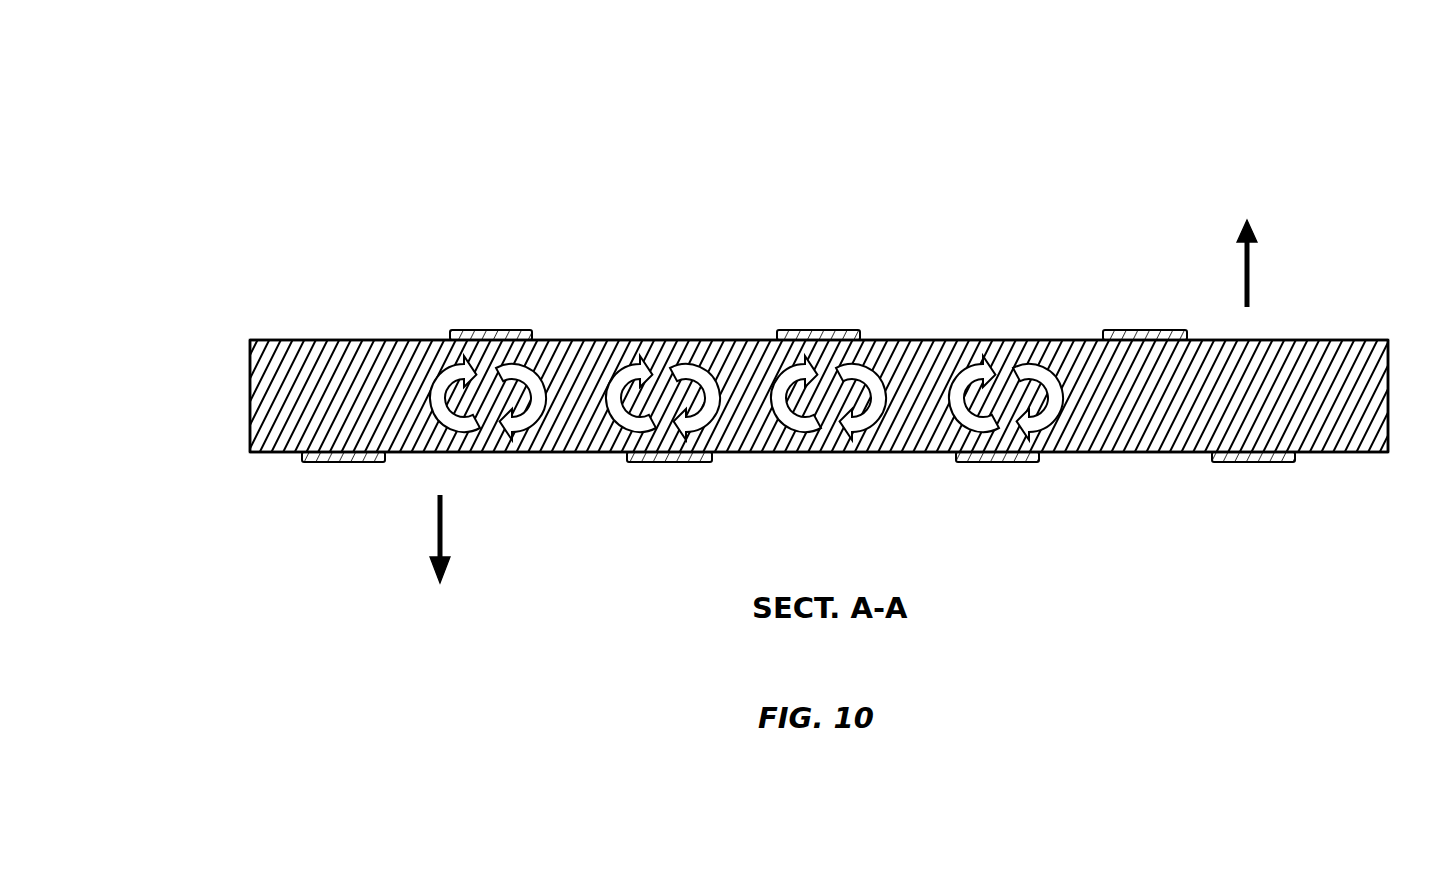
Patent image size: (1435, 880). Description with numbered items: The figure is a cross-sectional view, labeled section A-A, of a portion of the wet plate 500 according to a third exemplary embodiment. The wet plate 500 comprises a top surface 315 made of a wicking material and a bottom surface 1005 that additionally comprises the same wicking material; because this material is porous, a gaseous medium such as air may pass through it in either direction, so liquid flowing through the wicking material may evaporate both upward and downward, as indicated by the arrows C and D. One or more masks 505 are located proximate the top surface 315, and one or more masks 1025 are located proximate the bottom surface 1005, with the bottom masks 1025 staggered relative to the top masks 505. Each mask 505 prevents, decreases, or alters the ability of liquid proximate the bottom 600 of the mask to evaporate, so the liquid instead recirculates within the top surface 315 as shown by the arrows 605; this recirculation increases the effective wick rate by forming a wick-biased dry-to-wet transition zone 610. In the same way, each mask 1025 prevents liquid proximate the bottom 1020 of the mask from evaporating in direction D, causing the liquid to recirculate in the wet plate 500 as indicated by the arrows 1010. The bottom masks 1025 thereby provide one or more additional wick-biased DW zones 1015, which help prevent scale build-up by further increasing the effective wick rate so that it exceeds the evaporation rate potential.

The wet plate 500 is at (313, 133).
The top surface 315 is at (272, 389).
The mask 505 is at (484, 317).
The wick-biased dry-to-wet transition zone 610 is at (546, 333).
The arrows 1010 is at (938, 357).
The bottom of the mask 600 is at (1118, 356).
The arrows 605 is at (764, 385).
The bottom surface 1005 is at (273, 456).
The mask 1025 is at (990, 474).
The wick-biased DW zone 1015 is at (1060, 466).
The bottom of the mask 1020 is at (1278, 435).